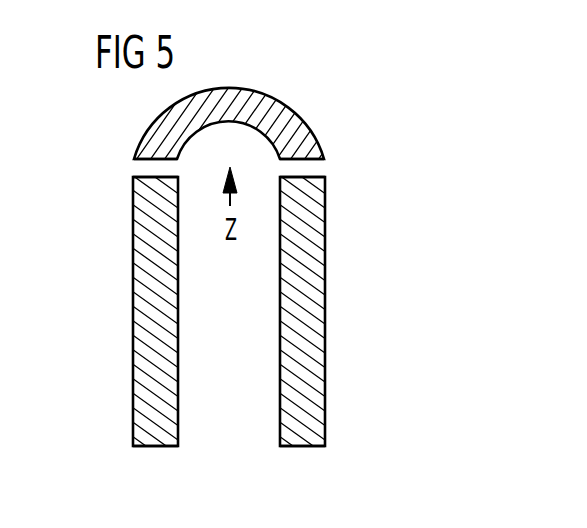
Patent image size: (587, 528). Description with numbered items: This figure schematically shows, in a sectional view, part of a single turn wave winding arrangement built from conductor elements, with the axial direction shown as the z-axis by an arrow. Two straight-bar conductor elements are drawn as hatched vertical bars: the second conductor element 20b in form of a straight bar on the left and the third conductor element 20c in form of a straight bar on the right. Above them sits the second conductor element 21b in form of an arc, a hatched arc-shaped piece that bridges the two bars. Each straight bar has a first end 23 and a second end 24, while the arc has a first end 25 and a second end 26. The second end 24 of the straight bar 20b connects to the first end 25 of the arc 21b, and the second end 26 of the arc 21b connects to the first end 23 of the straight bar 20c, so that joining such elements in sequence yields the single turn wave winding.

The second conductor element in form of an arc 21b is at (297, 122).
The second conductor element in form of a straight bar 20b is at (172, 303).
The third conductor element in form of a straight bar 20c is at (317, 302).
The first end 23 is at (303, 177).
The second end 24 is at (158, 177).
The first end 25 is at (153, 161).
The second end 26 is at (300, 161).